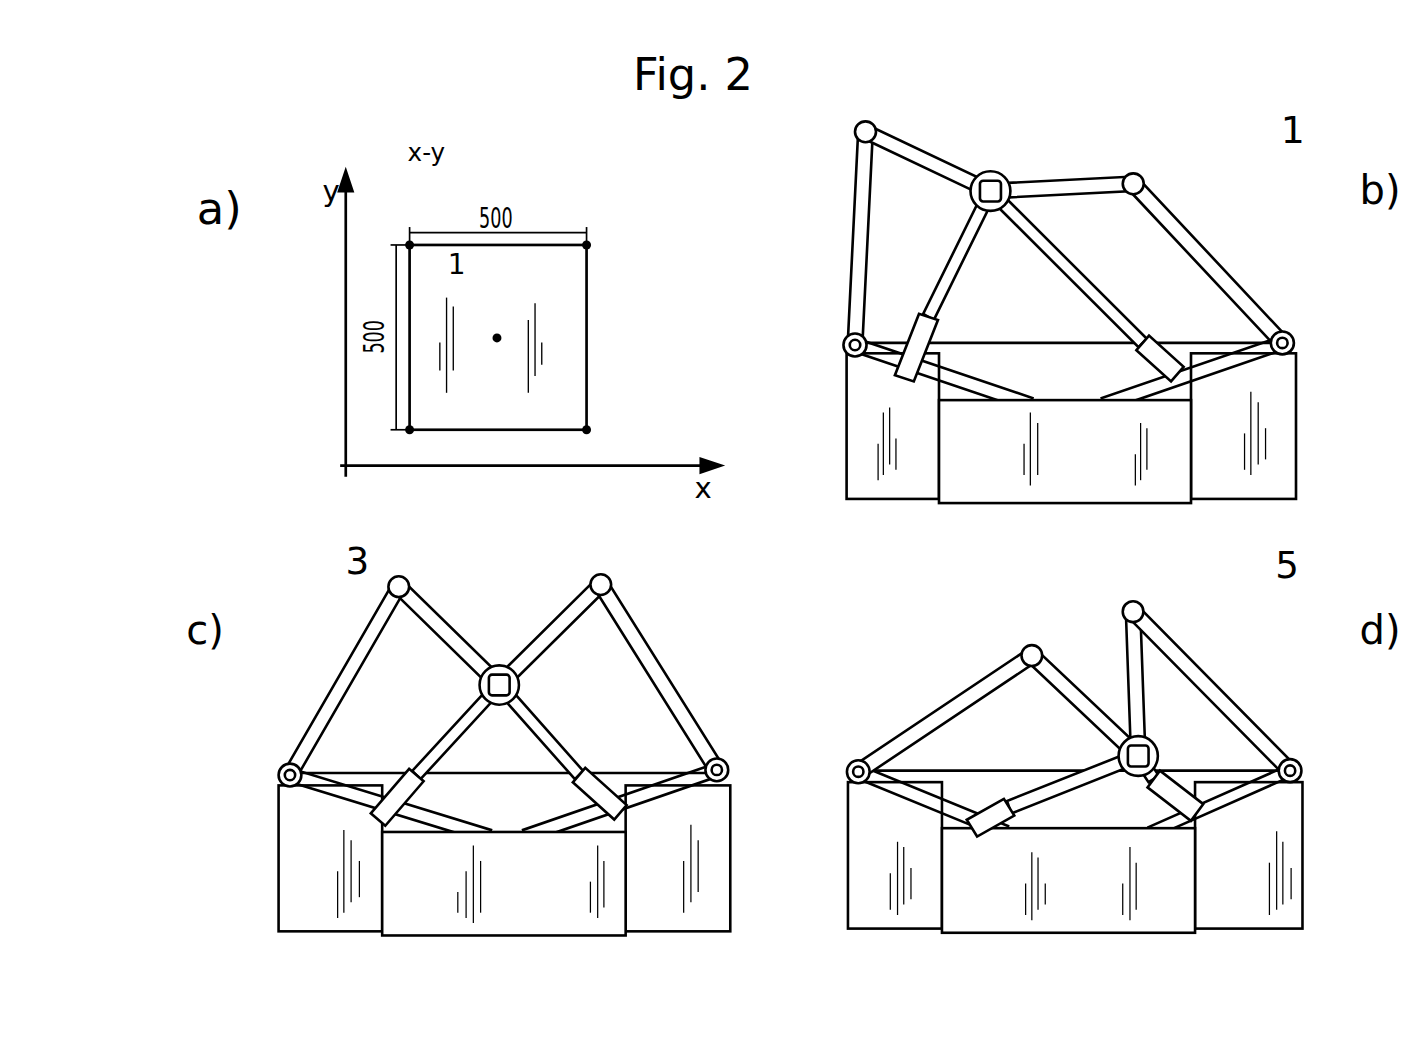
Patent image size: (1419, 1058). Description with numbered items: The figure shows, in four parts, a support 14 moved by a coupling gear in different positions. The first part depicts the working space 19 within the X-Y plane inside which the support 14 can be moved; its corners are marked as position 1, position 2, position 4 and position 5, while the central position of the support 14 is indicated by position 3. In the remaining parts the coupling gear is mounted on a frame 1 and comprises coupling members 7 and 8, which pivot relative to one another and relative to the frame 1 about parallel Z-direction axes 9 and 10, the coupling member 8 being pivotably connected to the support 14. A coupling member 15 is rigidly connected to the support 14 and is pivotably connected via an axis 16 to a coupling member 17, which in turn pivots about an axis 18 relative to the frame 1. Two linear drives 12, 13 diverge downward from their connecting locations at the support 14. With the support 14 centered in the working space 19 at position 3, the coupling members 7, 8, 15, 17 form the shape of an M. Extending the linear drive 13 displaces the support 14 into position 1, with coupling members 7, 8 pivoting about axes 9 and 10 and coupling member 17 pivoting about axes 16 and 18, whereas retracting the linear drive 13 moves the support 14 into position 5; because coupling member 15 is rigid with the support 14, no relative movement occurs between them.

The frame 1 is at (860, 437).
The position 2 is at (578, 260).
The position 3 is at (489, 339).
The position 4 is at (418, 417).
The position 5 is at (578, 417).
The coupling member 7 is at (1073, 180).
The coupling member 8 is at (1187, 247).
The axis 9 is at (1127, 177).
The axis 10 is at (1267, 320).
The linear drive 12 is at (452, 713).
The linear drive 13 is at (1053, 260).
The support 14 is at (980, 172).
The coupling member 15 is at (923, 155).
The axis 16 is at (858, 133).
The coupling member 17 is at (863, 238).
The axis 18 is at (843, 320).
The working space 19 is at (525, 307).